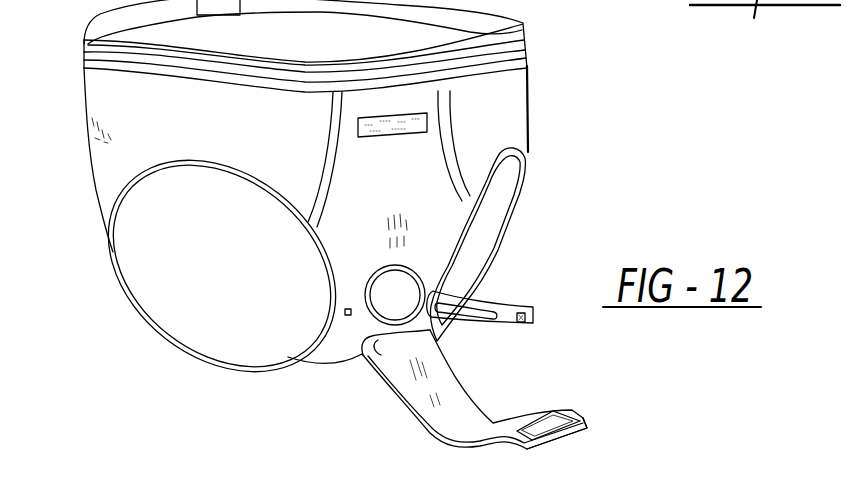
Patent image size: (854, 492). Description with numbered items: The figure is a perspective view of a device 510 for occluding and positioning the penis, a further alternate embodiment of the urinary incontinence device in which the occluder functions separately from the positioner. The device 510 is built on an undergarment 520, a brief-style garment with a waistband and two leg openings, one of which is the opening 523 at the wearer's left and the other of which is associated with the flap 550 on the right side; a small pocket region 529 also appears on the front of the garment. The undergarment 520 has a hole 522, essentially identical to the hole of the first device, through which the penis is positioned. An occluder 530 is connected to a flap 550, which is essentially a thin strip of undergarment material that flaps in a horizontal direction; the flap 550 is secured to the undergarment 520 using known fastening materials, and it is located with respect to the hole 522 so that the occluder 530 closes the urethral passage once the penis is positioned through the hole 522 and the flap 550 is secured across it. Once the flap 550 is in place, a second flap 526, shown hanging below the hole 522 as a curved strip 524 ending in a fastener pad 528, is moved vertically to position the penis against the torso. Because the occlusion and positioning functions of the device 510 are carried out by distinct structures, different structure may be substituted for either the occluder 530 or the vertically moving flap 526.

The device 510 is at (569, 325).
The undergarment 520 is at (541, 91).
The hole 522 is at (369, 290).
The left leg opening 523 is at (229, 369).
The crotch strip 524 is at (345, 383).
The flap 526 is at (588, 430).
The fastener pad 528 is at (568, 416).
The pocket 529 is at (373, 138).
The occluder 530 is at (488, 320).
The flap 550 is at (509, 304).